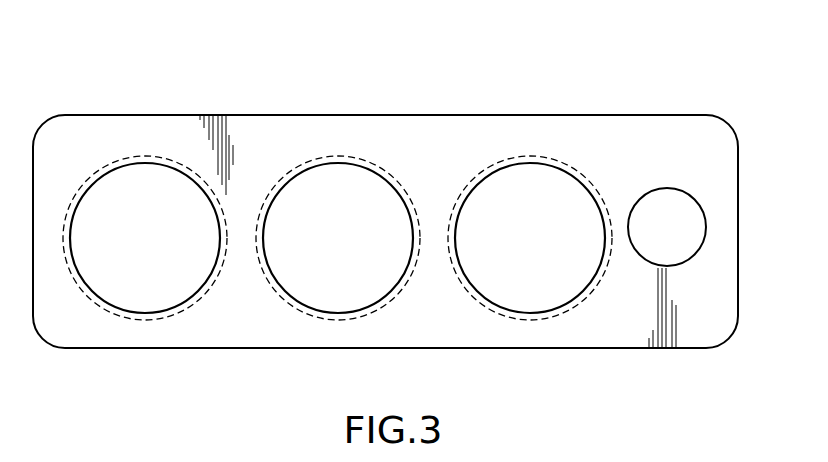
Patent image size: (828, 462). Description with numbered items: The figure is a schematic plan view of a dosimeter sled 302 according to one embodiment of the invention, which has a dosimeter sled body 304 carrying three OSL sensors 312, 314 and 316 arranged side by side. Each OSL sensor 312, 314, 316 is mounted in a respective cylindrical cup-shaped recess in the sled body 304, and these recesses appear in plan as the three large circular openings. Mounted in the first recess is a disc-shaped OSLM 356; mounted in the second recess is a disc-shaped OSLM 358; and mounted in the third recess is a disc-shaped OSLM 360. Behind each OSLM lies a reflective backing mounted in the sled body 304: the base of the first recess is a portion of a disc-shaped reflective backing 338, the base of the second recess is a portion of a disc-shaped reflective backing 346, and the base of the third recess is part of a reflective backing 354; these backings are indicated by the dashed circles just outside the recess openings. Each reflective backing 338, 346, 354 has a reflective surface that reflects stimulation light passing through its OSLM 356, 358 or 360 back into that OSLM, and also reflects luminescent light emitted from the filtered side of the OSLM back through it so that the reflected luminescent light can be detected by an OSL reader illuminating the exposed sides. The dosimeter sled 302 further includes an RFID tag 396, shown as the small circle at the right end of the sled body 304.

The dosimeter sled 302 is at (227, 91).
The dosimeter sled body 304 is at (425, 138).
The OSL sensor 312 is at (142, 170).
The OSL sensor 314 is at (335, 170).
The OSL sensor 316 is at (525, 170).
The reflective backing 338 is at (173, 316).
The reflective backing 346 is at (365, 317).
The reflective backing 354 is at (555, 317).
The OSLM 356 is at (137, 278).
The OSLM 358 is at (328, 280).
The OSLM 360 is at (518, 280).
The RFID tag 396 is at (668, 202).